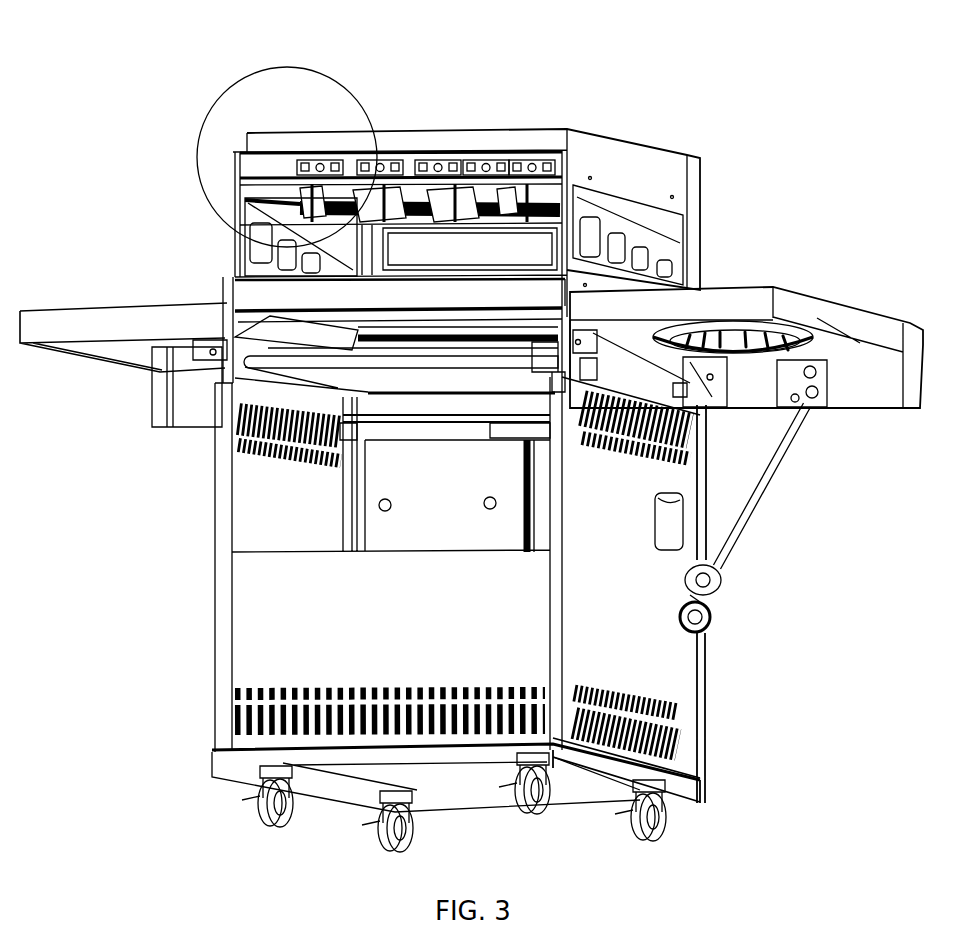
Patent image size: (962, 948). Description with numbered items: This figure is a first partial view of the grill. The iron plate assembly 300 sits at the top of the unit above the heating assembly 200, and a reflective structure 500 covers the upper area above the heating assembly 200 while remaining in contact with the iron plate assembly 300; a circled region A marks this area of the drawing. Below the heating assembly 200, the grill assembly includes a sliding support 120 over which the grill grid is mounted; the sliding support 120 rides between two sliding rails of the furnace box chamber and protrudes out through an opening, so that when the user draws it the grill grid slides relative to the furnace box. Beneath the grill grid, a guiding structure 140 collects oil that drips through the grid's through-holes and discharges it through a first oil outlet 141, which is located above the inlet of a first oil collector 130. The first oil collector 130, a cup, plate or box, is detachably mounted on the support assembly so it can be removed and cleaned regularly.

The detail region A is at (217, 100).
The reflective structure 500 is at (350, 160).
The iron plate assembly 300 is at (413, 128).
The heating assembly 200 is at (477, 187).
The sliding support 120 is at (262, 270).
The guiding structure 140 is at (265, 303).
The first oil outlet 141 is at (290, 327).
The first oil collector 130 is at (368, 383).